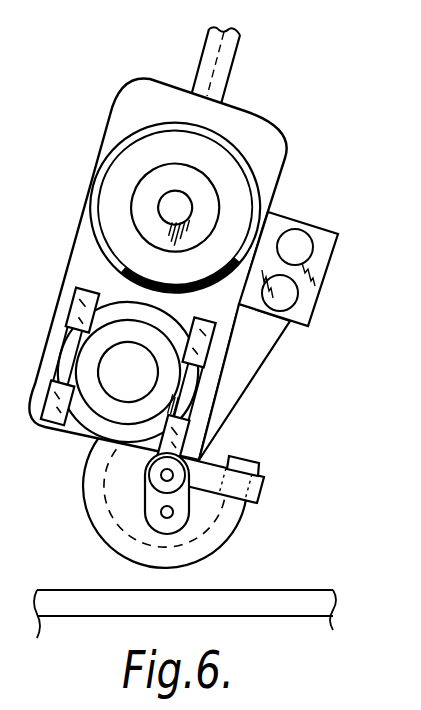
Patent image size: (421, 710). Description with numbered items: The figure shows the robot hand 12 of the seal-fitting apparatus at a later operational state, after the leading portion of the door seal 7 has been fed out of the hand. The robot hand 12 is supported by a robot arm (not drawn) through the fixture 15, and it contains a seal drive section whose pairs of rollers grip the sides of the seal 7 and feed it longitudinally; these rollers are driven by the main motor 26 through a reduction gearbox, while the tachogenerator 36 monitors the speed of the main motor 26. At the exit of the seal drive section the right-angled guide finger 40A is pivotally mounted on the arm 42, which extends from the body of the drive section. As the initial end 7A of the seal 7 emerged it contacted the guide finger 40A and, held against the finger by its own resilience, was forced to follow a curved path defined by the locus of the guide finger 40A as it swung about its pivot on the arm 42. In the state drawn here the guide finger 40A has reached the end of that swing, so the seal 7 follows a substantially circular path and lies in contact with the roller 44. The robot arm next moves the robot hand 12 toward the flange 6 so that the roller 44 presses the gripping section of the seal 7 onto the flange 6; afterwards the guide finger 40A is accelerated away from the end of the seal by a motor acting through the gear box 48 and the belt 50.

The robot hand 12 is at (111, 119).
The door seal 7 is at (229, 73).
The tachogenerator 36 is at (172, 205).
The main motor 26 is at (131, 212).
The fixture 15 is at (76, 302).
The gear box 48 is at (321, 229).
The belt 50 is at (251, 381).
The initial end of the seal 7A is at (246, 457).
The guide finger 40A is at (262, 493).
The arm 42 is at (152, 519).
The roller 44 is at (143, 520).
The flange 6 is at (270, 598).